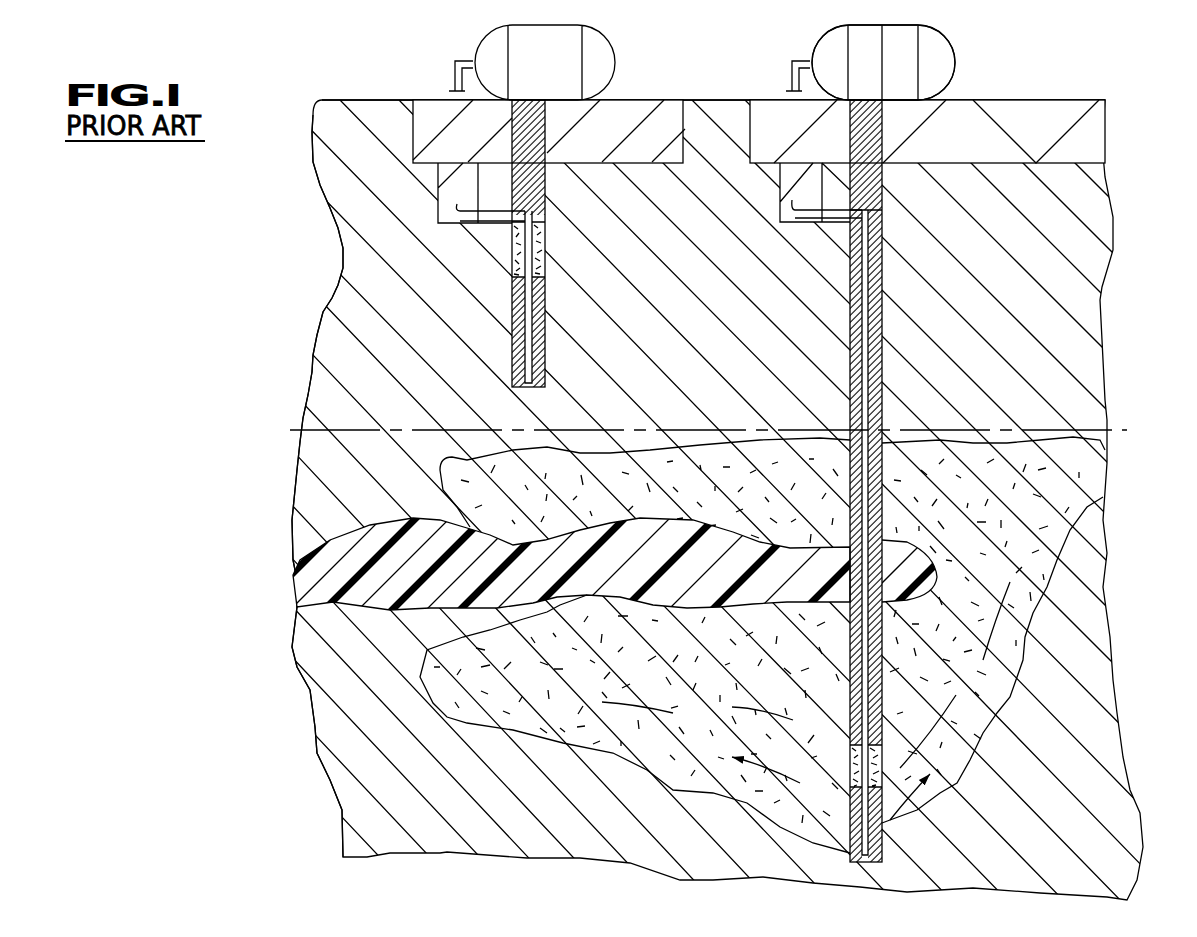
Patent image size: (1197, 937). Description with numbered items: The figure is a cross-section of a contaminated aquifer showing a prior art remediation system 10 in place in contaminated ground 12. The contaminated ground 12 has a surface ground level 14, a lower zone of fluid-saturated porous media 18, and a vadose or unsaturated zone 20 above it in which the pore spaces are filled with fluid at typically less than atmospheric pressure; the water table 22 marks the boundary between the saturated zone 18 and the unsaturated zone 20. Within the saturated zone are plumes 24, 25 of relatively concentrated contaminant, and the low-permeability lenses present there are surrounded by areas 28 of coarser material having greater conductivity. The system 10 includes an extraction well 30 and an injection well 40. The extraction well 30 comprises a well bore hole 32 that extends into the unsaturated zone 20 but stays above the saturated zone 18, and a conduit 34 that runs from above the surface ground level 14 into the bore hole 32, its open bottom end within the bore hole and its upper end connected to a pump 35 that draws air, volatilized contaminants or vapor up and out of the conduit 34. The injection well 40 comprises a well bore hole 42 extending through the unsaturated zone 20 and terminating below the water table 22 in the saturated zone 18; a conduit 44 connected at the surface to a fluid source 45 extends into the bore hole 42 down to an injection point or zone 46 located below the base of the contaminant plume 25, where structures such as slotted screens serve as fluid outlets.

The prior art remediation system 10 is at (956, 53).
The contaminated ground 12 is at (1125, 97).
The surface ground level 14 is at (1050, 99).
The saturated zone 18 is at (278, 857).
The vadose or unsaturated zone 20 is at (278, 100).
The water table 22 is at (1115, 425).
The contaminant plume 24 is at (455, 480).
The contaminant plume 25 is at (660, 766).
The areas of coarser material 28 is at (328, 413).
The extraction well 30 is at (513, 250).
The well bore hole 32 is at (513, 288).
The conduit 34 is at (548, 300).
The pump 35 is at (614, 60).
The injection well 40 is at (880, 235).
The well bore hole 42 is at (877, 287).
The conduit 44 is at (878, 368).
The fluid source 45 is at (827, 50).
The injection point or zone 46 is at (877, 848).